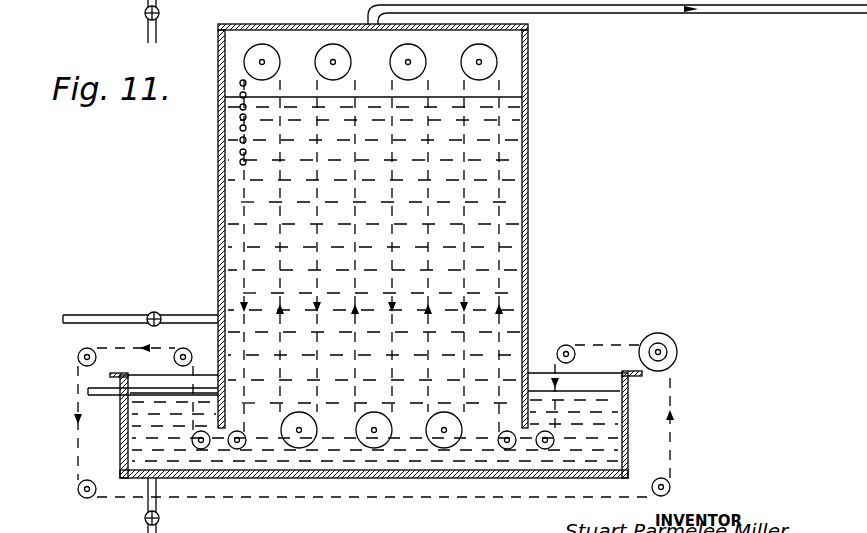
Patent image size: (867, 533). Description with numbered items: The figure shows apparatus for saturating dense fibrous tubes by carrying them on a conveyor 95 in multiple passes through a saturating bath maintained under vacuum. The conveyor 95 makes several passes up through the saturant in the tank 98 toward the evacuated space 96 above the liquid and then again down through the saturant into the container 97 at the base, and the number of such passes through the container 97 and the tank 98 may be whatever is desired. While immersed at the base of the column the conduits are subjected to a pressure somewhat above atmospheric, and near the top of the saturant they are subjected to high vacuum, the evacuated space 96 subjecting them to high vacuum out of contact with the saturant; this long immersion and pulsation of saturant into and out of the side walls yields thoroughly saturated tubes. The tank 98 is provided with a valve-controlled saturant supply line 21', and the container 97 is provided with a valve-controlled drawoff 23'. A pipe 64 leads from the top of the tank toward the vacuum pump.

The valve-controlled saturant supply line 21' is at (140, 337).
The valve-controlled drawoff 23' is at (173, 266).
The vacuum pipe to vacuum pump 64 is at (362, 2).
The conveyor 95 is at (600, 345).
The evacuated space 96 is at (517, 71).
The container 97 is at (626, 430).
The tank 98 is at (528, 242).